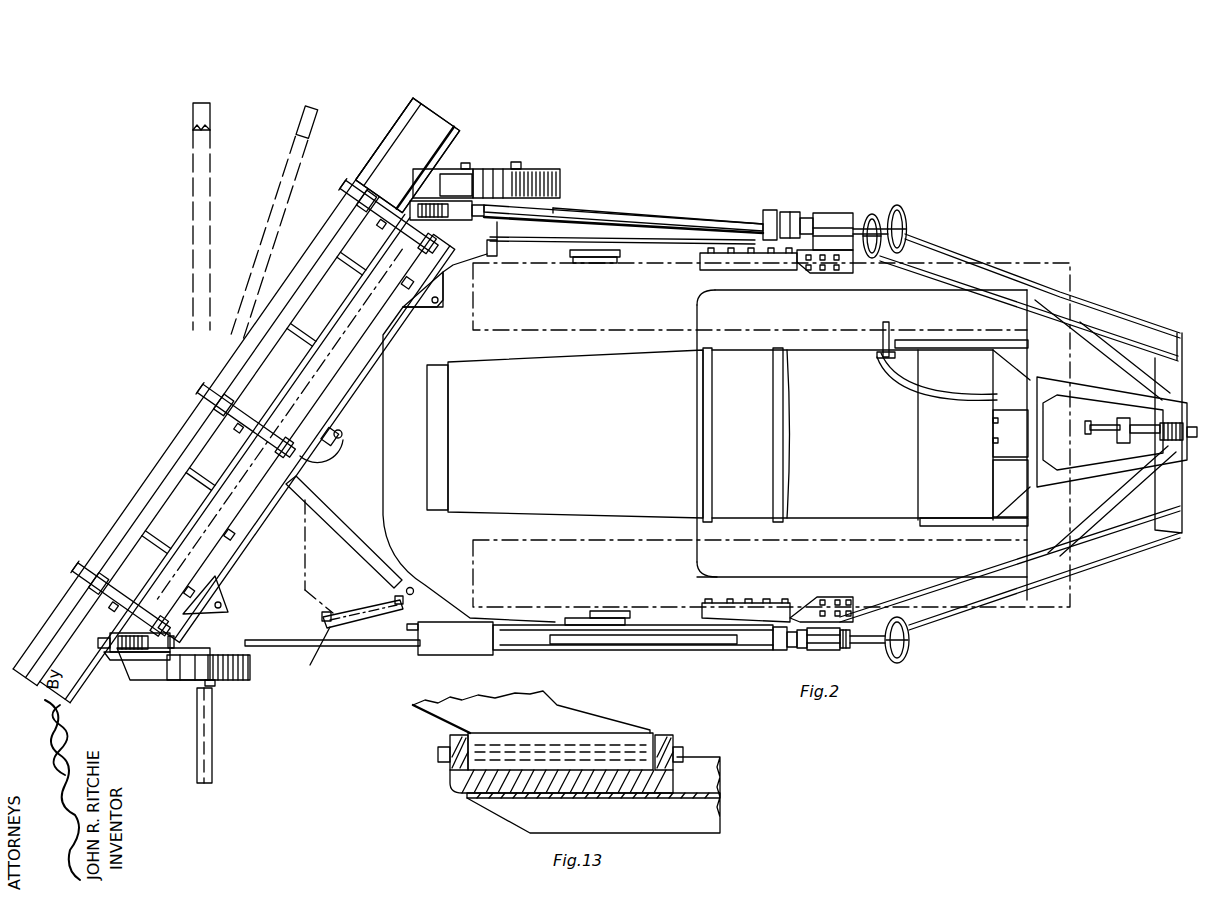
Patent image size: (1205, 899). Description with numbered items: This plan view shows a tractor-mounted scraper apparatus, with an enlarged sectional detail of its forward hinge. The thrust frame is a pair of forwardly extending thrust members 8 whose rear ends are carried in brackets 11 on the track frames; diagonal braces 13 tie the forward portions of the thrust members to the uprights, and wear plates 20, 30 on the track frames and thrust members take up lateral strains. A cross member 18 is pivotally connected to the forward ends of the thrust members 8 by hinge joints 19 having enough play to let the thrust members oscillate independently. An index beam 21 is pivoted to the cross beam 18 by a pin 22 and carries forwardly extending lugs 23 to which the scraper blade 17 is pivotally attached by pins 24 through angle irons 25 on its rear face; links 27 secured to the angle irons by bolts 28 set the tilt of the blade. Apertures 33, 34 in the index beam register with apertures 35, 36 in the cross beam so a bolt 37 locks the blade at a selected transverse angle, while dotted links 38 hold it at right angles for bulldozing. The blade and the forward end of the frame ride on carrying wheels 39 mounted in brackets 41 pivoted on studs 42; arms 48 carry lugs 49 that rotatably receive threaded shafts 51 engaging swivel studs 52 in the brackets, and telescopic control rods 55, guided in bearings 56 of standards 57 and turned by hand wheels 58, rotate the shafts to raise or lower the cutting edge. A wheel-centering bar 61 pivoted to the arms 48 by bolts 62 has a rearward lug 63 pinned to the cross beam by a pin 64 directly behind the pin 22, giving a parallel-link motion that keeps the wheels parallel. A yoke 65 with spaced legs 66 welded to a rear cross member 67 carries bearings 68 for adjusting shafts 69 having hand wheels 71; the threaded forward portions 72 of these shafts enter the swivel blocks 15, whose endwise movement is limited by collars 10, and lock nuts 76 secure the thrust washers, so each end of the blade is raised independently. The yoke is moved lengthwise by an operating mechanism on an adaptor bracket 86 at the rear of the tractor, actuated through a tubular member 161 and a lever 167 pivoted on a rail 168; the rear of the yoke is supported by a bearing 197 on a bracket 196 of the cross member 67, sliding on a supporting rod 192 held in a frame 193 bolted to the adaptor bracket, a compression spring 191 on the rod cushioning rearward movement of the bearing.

In FIG. 2, the thrust members 8 is at (698, 218).
In FIG. 13, the thrust members 8 is at (515, 820).
In FIG. 2, the collars 10 is at (790, 212).
In FIG. 2, the brackets 11 is at (815, 275).
In FIG. 2, the diagonal braces 13 is at (595, 222).
In FIG. 2, the swivel blocks 15 is at (805, 215).
In FIG. 2, the scraper blade 17 is at (185, 217).
In FIG. 2, the cross member 18 is at (362, 570).
In FIG. 13, the cross member 18 is at (582, 712).
In FIG. 2, the hinge joints 19 is at (498, 257).
In FIG. 13, the hinge joints 19 is at (625, 745).
In FIG. 2, the wear plates 20 is at (585, 258).
In FIG. 2, the index beam 21 is at (245, 548).
In FIG. 2, the pin or bolt 22 is at (305, 445).
In FIG. 2, the lugs 23 is at (398, 228).
In FIG. 2, the pins or bolts 24 is at (375, 230).
In FIG. 2, the angle irons 25 is at (365, 192).
In FIG. 2, the links 27 is at (390, 195).
In FIG. 2, the bolts 28 is at (378, 185).
In FIG. 2, the wear plates 30 is at (625, 245).
In FIG. 2, the apertures 33 is at (188, 590).
In FIG. 2, the apertures 34 is at (445, 308).
In FIG. 2, the apertures 35 is at (395, 604).
In FIG. 2, the apertures 36 is at (413, 588).
In FIG. 2, the bolt 37 is at (405, 300).
In FIG. 2, the links 38 is at (328, 640).
In FIG. 2, the carrying wheels 39 is at (552, 170).
In FIG. 2, the brackets 41 is at (470, 172).
In FIG. 2, the studs 42 is at (465, 162).
In FIG. 2, the arms 48 is at (165, 660).
In FIG. 2, the lugs 49 is at (478, 178).
In FIG. 2, the threaded shafts 51 is at (437, 220).
In FIG. 2, the swivel studs 52 is at (445, 135).
In FIG. 2, the telescopic control rods 55 is at (645, 218).
In FIG. 2, the guide bearings 56 is at (765, 215).
In FIG. 2, the standards 57 is at (772, 210).
In FIG. 2, the hand wheel 58 is at (872, 212).
In FIG. 2, the wheel-centering bar 61 is at (292, 520).
In FIG. 2, the bolts 62 is at (176, 642).
In FIG. 2, the lug 63 is at (348, 422).
In FIG. 2, the pin 64 is at (345, 436).
In FIG. 2, the yoke 65 is at (1089, 284).
In FIG. 2, the legs 66 is at (948, 264).
In FIG. 2, the rear cross member 67 is at (1165, 360).
In FIG. 2, the bearings 68 is at (828, 212).
In FIG. 2, the adjusting rods or shafts 69 is at (872, 634).
In FIG. 2, the hand wheels 71 is at (902, 208).
In FIG. 2, the forward end portions 72 is at (802, 650).
In FIG. 2, the lock nuts 76 is at (848, 650).
In FIG. 2, the adaptor bracket 86 is at (1000, 490).
In FIG. 2, the tubular member 161 is at (908, 392).
In FIG. 2, the lever 167 is at (889, 350).
In FIG. 2, the rail 168 is at (960, 340).
In FIG. 2, the compression spring 191 is at (1177, 450).
In FIG. 2, the supporting rod 192 is at (1092, 422).
In FIG. 2, the frame 193 is at (1072, 385).
In FIG. 2, the bracket 196 is at (1170, 440).
In FIG. 2, the bearing 197 is at (1117, 432).